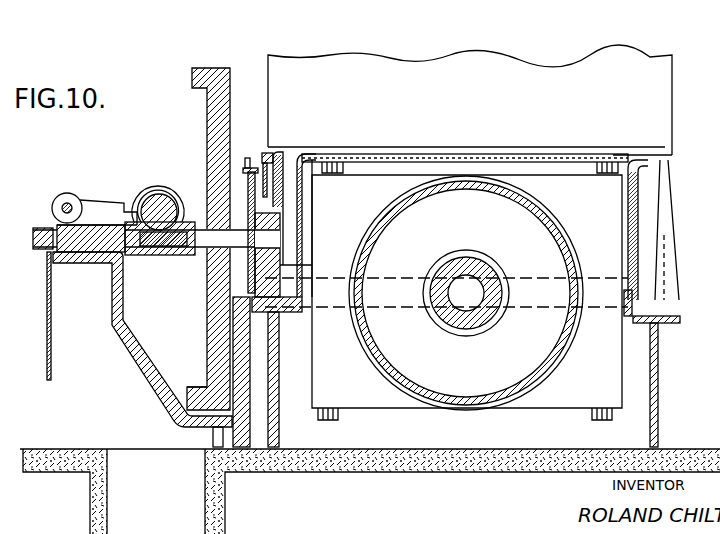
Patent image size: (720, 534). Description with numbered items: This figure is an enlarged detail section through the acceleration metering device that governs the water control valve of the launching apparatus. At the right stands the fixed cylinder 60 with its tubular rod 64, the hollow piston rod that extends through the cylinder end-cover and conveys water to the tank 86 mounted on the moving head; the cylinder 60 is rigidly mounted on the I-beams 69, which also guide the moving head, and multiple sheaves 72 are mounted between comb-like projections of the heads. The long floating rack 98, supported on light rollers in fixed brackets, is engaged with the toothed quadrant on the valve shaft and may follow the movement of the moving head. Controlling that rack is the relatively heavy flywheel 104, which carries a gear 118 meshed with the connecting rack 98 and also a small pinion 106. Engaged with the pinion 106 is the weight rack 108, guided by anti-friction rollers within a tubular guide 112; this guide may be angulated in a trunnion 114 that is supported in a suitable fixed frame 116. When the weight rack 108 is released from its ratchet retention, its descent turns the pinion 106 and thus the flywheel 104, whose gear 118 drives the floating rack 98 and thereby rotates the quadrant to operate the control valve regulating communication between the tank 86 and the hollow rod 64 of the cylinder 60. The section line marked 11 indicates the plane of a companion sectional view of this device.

The fixed cylinder 60 is at (568, 256).
The tubular rod 64 is at (483, 277).
The I-beams 69 is at (280, 395).
The sheaves 72 is at (335, 420).
The tank 86 is at (668, 87).
The floating rack 98 is at (245, 158).
The flywheel 104 is at (212, 68).
The pinion 106 is at (152, 255).
The weight rack 108 is at (153, 188).
The tubular guide 112 is at (167, 190).
The trunnion 114 is at (108, 240).
The fixed frame 116 is at (140, 362).
The gear 118 is at (250, 198).
The section line 11 is at (163, 155).